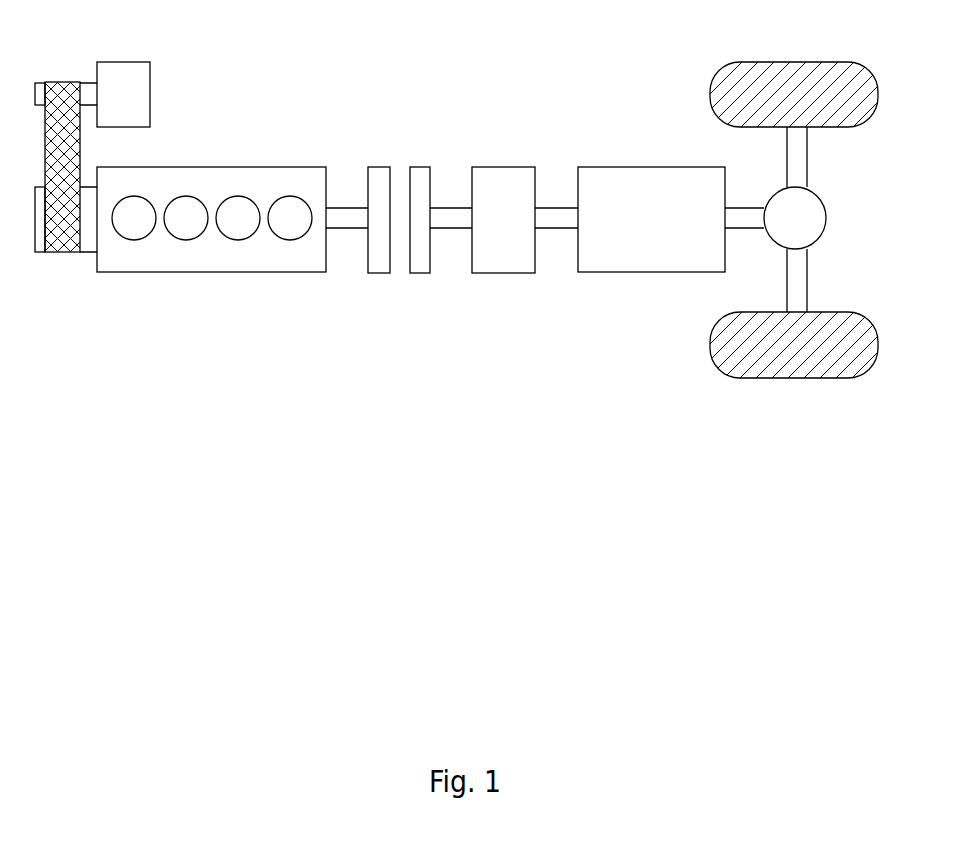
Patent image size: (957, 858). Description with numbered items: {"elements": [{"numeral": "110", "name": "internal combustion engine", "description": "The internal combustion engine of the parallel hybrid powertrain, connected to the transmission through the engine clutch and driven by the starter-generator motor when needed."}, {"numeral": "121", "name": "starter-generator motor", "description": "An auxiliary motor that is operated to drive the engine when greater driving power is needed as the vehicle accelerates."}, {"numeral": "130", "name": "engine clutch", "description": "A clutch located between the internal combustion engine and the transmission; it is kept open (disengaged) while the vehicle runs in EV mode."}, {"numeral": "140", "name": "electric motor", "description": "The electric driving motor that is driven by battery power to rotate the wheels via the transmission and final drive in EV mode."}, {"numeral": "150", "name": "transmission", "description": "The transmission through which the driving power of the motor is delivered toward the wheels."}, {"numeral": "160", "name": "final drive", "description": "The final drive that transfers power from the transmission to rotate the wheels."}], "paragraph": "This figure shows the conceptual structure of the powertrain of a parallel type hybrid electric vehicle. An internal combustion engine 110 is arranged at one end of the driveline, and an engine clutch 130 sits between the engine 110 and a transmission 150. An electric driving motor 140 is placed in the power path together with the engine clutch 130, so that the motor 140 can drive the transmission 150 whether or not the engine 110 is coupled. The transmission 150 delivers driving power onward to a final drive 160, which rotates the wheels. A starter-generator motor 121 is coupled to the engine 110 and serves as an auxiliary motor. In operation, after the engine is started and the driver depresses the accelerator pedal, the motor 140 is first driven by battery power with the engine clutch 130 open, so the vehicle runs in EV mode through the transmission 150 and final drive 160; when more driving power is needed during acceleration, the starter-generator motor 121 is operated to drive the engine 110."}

The internal combustion engine (ICE) 110 is at (285, 165).
The engine auxiliary unit (cooling module component) 121 is at (152, 73).
The clutch 130 is at (427, 165).
The motor 140 is at (510, 165).
The automatic transmission 150 is at (687, 163).
The final drive (FD) 160 is at (827, 202).